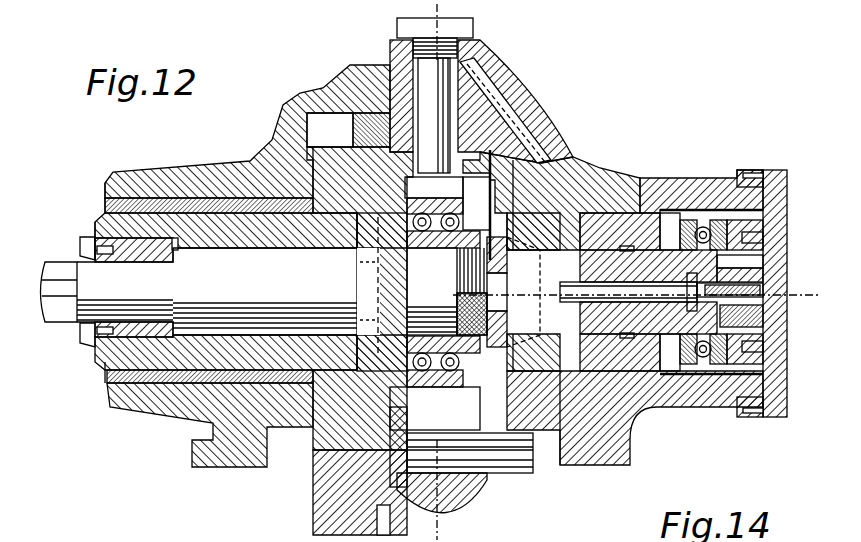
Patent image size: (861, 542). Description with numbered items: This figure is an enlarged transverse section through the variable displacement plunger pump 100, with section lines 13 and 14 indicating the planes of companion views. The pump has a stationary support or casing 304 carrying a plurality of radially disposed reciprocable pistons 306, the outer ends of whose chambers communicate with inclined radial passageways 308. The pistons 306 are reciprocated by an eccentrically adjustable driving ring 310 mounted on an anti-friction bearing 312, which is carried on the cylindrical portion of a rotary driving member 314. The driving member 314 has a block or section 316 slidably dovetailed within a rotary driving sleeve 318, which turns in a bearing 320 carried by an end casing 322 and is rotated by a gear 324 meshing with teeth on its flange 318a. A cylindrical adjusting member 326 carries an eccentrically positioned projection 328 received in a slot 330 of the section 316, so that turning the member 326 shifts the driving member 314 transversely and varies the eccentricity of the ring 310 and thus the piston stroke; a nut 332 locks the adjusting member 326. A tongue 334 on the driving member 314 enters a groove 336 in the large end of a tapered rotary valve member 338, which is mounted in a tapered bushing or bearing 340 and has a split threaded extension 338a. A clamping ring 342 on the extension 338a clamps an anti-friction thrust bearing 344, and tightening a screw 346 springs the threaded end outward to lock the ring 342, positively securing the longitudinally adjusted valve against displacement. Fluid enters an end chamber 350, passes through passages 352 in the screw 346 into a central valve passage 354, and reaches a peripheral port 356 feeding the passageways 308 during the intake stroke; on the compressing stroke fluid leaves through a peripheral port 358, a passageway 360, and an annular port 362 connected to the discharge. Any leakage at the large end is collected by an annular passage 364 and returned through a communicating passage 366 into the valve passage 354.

The plunger pump 100 is at (238, 113).
The stationary support or casing 304 is at (507, 105).
The pistons 306 is at (440, 93).
The inclined radial passageways 308 is at (530, 128).
The eccentrically adjustable driving ring 310 is at (540, 145).
The anti-friction bearing 312 is at (437, 378).
The rotary driving member 314 is at (447, 291).
The block or section 316 is at (295, 440).
The rotary driving sleeve 318 is at (278, 347).
The flange 318a is at (330, 157).
The bearing 320 is at (213, 374).
The end casing 322 is at (137, 398).
The gear 324 is at (323, 513).
The cylindrical adjusting member 326 is at (193, 265).
The eccentrically positioned projection 328 is at (347, 249).
The slot 330 is at (360, 292).
The nut 332 is at (97, 340).
The tongue 334 is at (489, 232).
The groove 336 is at (489, 300).
The rotary valve member 338 is at (657, 410).
The threaded extension 338a is at (765, 348).
The tapered bushing or bearing 340 is at (612, 357).
The clamping ring 342 is at (750, 222).
The anti-friction thrust bearing 344 is at (717, 222).
The screw 346 is at (765, 313).
The end chamber 350 is at (698, 212).
The passages 352 is at (765, 285).
The central valve passage 354 is at (628, 292).
The peripheral port 356 is at (543, 417).
The peripheral port 358 is at (577, 215).
The passageway 360 is at (648, 292).
The annular port 362 is at (628, 248).
The annular passage 364 is at (560, 153).
The communicating passage 366 is at (527, 290).
The section line 13- 13 is at (436, 21).
The section line 14- 14 is at (454, 295).